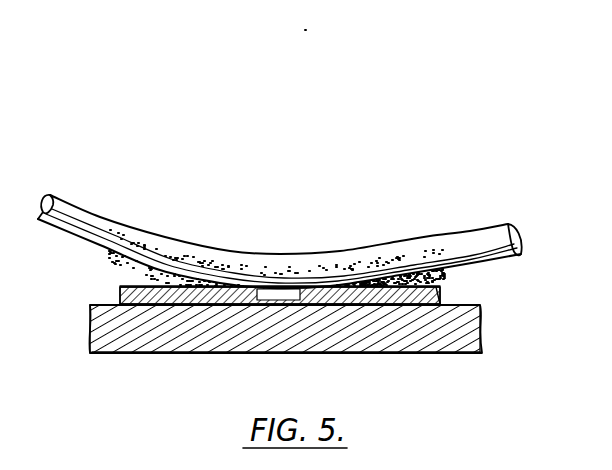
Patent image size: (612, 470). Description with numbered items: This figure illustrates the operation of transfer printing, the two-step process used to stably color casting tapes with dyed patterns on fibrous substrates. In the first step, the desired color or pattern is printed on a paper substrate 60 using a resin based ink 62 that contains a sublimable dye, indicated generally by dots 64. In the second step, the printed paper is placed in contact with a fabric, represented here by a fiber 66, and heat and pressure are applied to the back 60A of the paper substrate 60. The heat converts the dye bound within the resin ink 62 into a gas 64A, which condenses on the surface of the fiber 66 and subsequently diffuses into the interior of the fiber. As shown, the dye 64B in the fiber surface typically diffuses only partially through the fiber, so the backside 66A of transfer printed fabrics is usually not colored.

The paper substrate 60 is at (480, 316).
The back of paper substrate 60A is at (360, 355).
The resin based ink 62 is at (124, 285).
The sublimable dye 64 is at (122, 292).
The gas 64A is at (441, 283).
The dye in fiber surface 64B is at (164, 262).
The fiber 66 is at (451, 247).
The backside of fiber 66A is at (365, 249).